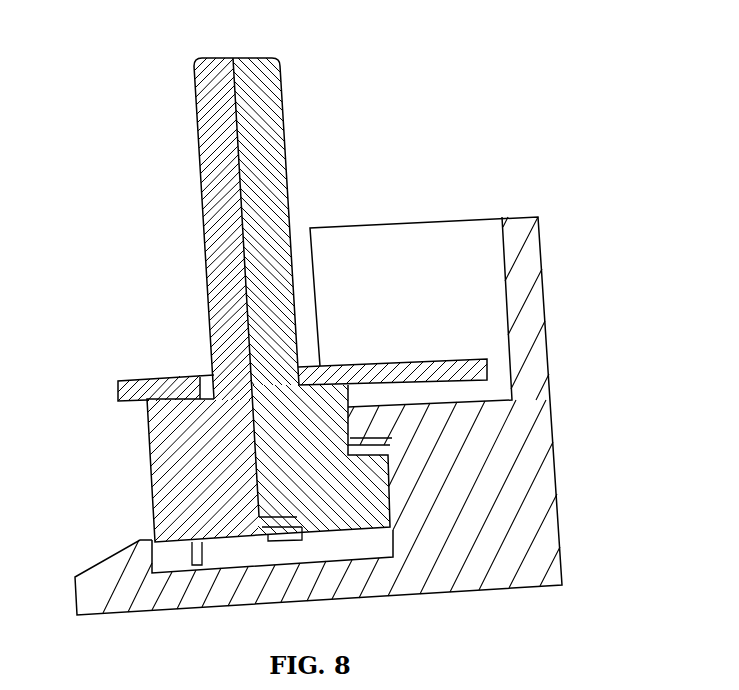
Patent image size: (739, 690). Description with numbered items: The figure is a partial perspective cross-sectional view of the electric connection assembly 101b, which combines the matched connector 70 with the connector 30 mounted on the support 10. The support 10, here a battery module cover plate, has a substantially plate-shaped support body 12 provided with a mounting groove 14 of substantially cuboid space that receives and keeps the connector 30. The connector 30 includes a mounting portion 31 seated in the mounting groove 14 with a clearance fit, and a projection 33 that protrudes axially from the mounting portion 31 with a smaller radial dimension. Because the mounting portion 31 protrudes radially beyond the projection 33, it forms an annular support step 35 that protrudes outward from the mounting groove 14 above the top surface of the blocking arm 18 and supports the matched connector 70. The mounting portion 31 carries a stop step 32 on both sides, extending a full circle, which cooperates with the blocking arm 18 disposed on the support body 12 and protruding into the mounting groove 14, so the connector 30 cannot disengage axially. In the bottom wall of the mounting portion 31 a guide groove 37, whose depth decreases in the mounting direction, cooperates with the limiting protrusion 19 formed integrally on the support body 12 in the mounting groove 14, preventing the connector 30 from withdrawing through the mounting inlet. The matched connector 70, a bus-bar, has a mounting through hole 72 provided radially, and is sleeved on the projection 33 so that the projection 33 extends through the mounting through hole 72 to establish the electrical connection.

The electric connection assembly 101b is at (293, 48).
The projection 33 is at (211, 270).
The mounting through hole 72 is at (206, 374).
The matched connector 70 is at (153, 380).
The support 10 is at (84, 460).
The blocking arm 18 is at (293, 520).
The mounting groove 14 is at (205, 538).
The limiting protrusion 19 is at (213, 552).
The support body 12 is at (243, 608).
The support step 35 is at (490, 358).
The stop step 32 is at (350, 428).
The mounting portion 31 is at (387, 475).
The guide groove 37 is at (393, 521).
The connector 30 is at (608, 323).